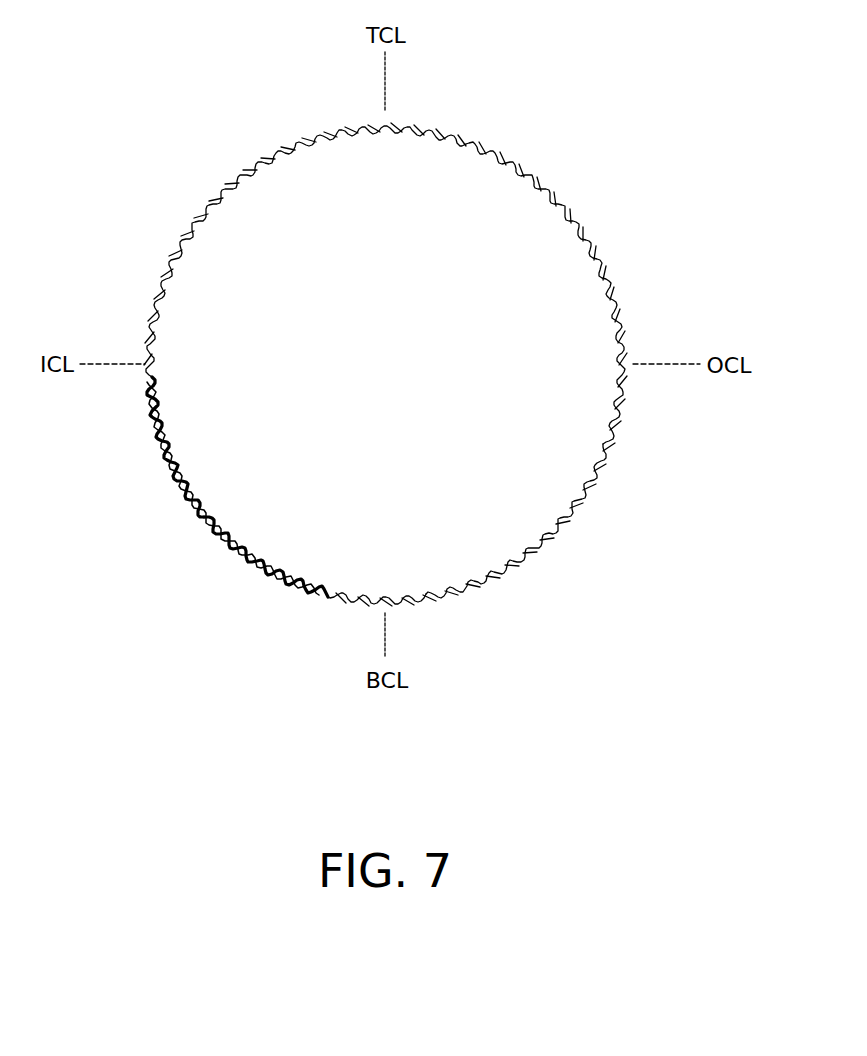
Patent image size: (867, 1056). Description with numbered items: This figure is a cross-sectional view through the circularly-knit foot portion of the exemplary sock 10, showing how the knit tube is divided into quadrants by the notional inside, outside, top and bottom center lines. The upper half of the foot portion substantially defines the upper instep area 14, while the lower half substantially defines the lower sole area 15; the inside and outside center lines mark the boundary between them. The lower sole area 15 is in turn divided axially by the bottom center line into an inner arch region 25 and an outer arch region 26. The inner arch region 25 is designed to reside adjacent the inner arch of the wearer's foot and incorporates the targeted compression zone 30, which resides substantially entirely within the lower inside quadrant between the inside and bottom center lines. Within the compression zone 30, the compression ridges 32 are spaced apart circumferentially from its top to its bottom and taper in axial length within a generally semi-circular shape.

The sock 10 is at (140, 175).
The upper instep area 14 is at (576, 192).
The lower sole area 15 is at (512, 572).
The inner arch region 25 is at (232, 515).
The outer arch region 26 is at (530, 520).
The targeted compression zone 30 is at (157, 494).
The compression ridges 32 is at (162, 462).